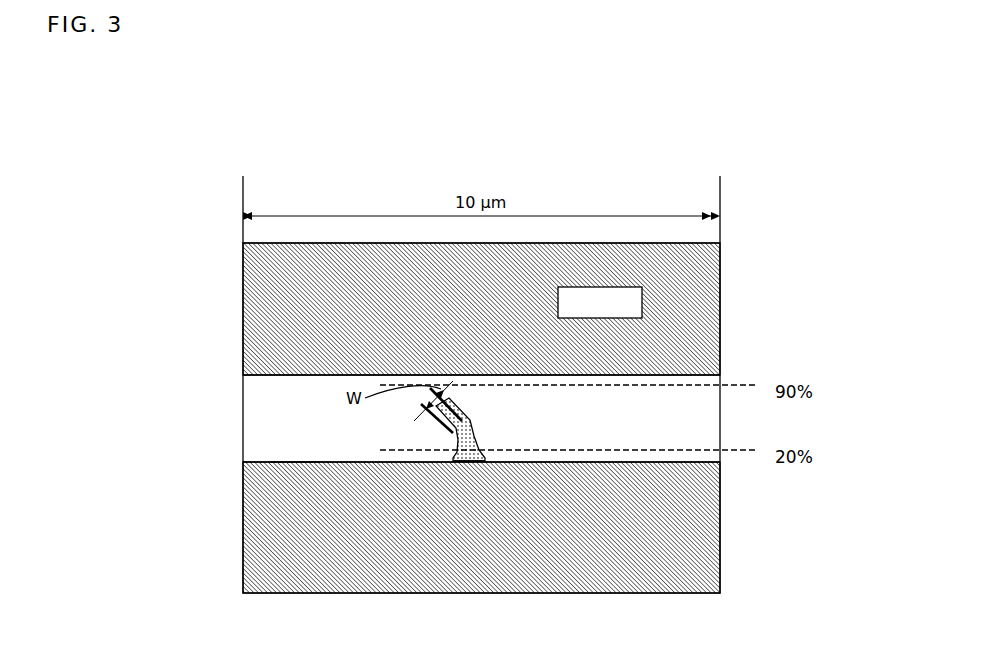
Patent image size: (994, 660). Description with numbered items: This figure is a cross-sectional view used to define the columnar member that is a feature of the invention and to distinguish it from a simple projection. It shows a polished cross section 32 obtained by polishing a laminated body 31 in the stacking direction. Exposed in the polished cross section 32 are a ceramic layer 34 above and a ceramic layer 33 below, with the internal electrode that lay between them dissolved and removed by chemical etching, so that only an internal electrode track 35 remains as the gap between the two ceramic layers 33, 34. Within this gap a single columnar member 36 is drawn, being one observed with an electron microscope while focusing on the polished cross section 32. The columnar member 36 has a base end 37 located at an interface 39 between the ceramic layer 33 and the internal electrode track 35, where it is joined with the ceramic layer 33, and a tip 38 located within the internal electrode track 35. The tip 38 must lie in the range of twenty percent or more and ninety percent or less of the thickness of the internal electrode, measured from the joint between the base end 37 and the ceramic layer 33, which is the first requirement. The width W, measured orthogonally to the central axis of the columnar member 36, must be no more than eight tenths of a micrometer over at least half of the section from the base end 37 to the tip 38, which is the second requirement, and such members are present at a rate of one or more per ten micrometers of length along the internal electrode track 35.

The laminated body 31 is at (343, 88).
The polished cross section 32 is at (600, 302).
The ceramic layer 33 is at (232, 462).
The ceramic layer 34 is at (232, 243).
The internal electrode track 35 is at (232, 375).
The columnar member 36 is at (477, 437).
The base end 37 is at (469, 463).
The tip 38 is at (424, 412).
The interface 39 is at (290, 461).